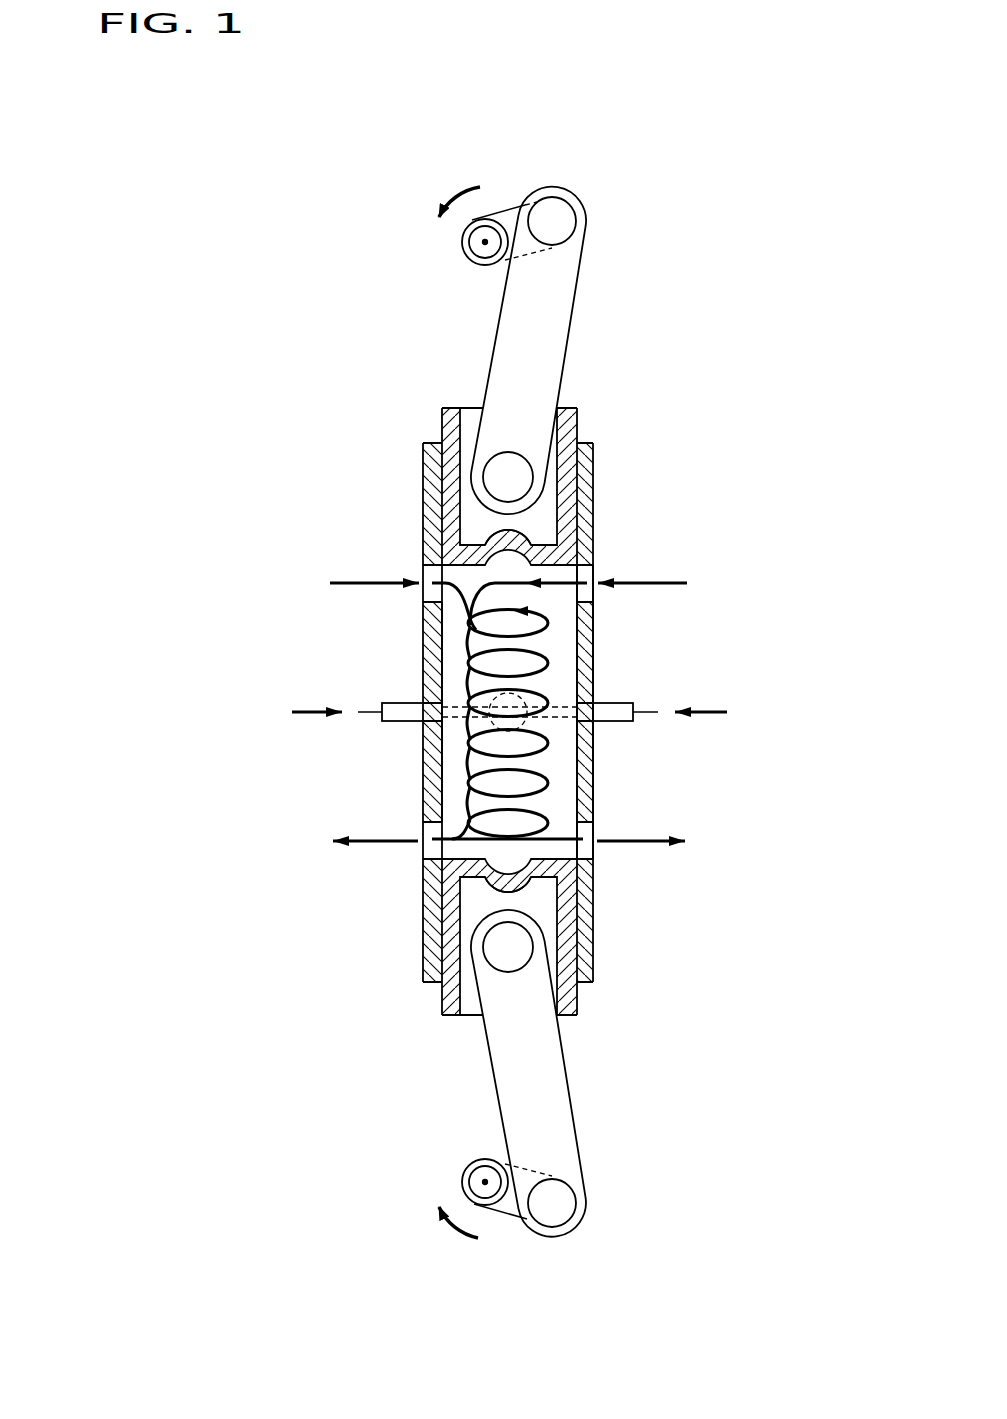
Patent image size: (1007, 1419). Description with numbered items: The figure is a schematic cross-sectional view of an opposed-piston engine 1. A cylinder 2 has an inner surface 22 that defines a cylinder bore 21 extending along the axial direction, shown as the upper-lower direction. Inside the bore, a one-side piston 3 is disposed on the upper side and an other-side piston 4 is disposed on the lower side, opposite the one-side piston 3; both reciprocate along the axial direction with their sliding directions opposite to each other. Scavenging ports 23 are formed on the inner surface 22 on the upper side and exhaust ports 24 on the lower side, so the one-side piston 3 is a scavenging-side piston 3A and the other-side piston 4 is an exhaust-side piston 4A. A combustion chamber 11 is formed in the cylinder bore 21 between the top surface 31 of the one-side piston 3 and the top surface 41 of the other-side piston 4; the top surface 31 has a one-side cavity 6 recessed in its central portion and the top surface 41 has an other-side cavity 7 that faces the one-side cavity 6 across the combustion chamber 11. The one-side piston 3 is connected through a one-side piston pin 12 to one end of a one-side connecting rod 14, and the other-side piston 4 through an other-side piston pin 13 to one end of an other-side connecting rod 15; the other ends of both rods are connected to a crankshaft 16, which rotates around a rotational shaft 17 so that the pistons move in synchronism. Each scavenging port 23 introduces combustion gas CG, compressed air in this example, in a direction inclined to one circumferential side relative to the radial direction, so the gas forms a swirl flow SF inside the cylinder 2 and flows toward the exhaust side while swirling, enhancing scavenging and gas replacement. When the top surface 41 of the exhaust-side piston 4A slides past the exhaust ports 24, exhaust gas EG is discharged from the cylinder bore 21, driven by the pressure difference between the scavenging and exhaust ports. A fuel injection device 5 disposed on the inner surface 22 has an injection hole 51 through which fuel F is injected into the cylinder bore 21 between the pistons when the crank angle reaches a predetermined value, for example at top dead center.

The opposed-piston engine 1 is at (377, 45).
The cylinder 2 is at (423, 965).
The one-side piston 3 is at (440, 433).
The scavenging-side piston 3A is at (508, 504).
The other-side piston 4 is at (577, 1003).
The exhaust-side piston 4A is at (508, 920).
The fuel injection device 5 is at (413, 702).
The one-side cavity 6 is at (502, 553).
The other-side cavity 7 is at (452, 843).
The combustion chamber 11 is at (567, 763).
The one-side piston pin 12 is at (510, 462).
The other-side piston pin 13 is at (515, 960).
The one-side connecting rod 14 is at (555, 360).
The other-side connecting rod 15 is at (557, 1073).
The crankshaft 16 is at (506, 212).
The rotational shaft 17 is at (485, 242).
The cylinder bore 21 is at (445, 763).
The inner surface 22 is at (577, 798).
The scavenging port 23 is at (595, 573).
The exhaust port 24 is at (595, 845).
The top surface 31 is at (460, 563).
The top surface 41 is at (460, 878).
The injection hole 51 is at (432, 705).
The swirl flow SF is at (548, 657).
The combustion gas CG is at (507, 596).
The exhaust gas EG is at (507, 840).
The fuel F is at (507, 712).